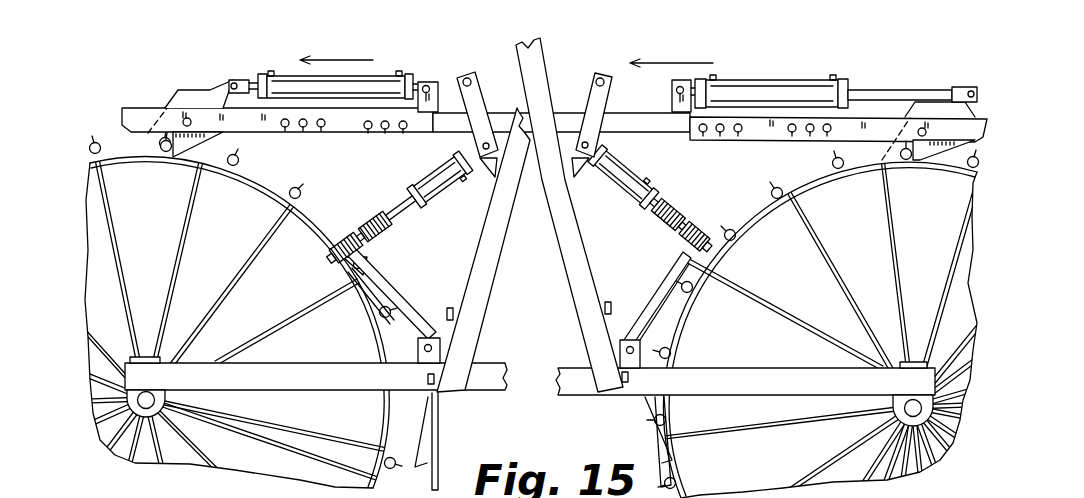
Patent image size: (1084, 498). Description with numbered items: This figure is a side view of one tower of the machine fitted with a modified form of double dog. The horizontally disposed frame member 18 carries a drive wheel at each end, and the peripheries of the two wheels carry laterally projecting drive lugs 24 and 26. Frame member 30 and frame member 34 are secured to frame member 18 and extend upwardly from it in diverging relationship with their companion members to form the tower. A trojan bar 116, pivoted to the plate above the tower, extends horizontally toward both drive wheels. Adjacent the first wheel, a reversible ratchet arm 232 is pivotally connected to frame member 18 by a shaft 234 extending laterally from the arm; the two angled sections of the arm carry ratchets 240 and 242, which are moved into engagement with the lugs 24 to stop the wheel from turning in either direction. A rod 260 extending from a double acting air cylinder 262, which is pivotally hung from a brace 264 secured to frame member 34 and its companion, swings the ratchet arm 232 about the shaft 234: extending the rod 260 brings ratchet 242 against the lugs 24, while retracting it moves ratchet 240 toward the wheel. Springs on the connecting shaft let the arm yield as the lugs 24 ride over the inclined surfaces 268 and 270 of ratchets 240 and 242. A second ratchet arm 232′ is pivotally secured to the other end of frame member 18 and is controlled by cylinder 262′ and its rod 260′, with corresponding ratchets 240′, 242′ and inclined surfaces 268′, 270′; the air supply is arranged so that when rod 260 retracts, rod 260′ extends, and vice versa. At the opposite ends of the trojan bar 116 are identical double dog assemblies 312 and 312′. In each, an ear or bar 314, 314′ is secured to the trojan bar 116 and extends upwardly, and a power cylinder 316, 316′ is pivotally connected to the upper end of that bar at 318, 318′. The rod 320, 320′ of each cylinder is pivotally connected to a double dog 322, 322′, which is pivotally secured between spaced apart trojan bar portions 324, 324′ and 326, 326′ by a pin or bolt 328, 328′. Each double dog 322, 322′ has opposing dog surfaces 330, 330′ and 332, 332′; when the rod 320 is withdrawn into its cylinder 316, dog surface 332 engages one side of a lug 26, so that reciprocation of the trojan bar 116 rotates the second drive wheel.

The frame member 18 is at (350, 385).
The drive lugs 24 is at (295, 188).
The drive lugs 26 is at (732, 229).
The frame member 30 is at (585, 310).
The frame member 34 is at (457, 318).
The trojan bar 116 is at (572, 118).
The ratchet arm 232 is at (409, 279).
The ratchet arm 232′ is at (647, 278).
The shaft 234 is at (425, 348).
The ratchet 240 is at (390, 477).
The ratchet 240′ is at (663, 468).
The ratchet 242 is at (345, 272).
The ratchet 242′ is at (713, 270).
The rod 260 is at (427, 176).
The rod 260′ is at (658, 194).
The air cylinder 262 is at (394, 208).
The air cylinder 262′ is at (628, 175).
The brace 264 is at (484, 166).
The inclined surface 268 is at (425, 440).
The inclined surface 268′ is at (672, 436).
The inclined surface 270 is at (376, 295).
The inclined surface 270′ is at (690, 265).
The double trojan bar dog assembly 312 is at (355, 75).
The double trojan bar dog assembly 312′ is at (790, 80).
The ear or bar 314 is at (440, 93).
The ear or bar 314′ is at (673, 103).
The power cylinder 316 is at (288, 76).
The power cylinder 316′ is at (750, 90).
The pivotal connection 318 is at (426, 85).
The pivotal connection 318′ is at (688, 80).
The rod 320 is at (234, 80).
The rod 320′ is at (862, 90).
The double dog 322 is at (185, 90).
The double dog 322′ is at (945, 112).
The trojan bar portion 324 is at (232, 83).
The trojan bar portion 324′ is at (972, 91).
The trojan bar portion 326 is at (122, 118).
The trojan bar portion 326′ is at (985, 117).
The pin or bolt 328 is at (185, 120).
The pin or bolt 328′ is at (925, 136).
The dog surface 330 is at (170, 152).
The dog surface 330′ is at (906, 160).
The dog surface 332 is at (147, 157).
The dog surface 332′ is at (862, 172).